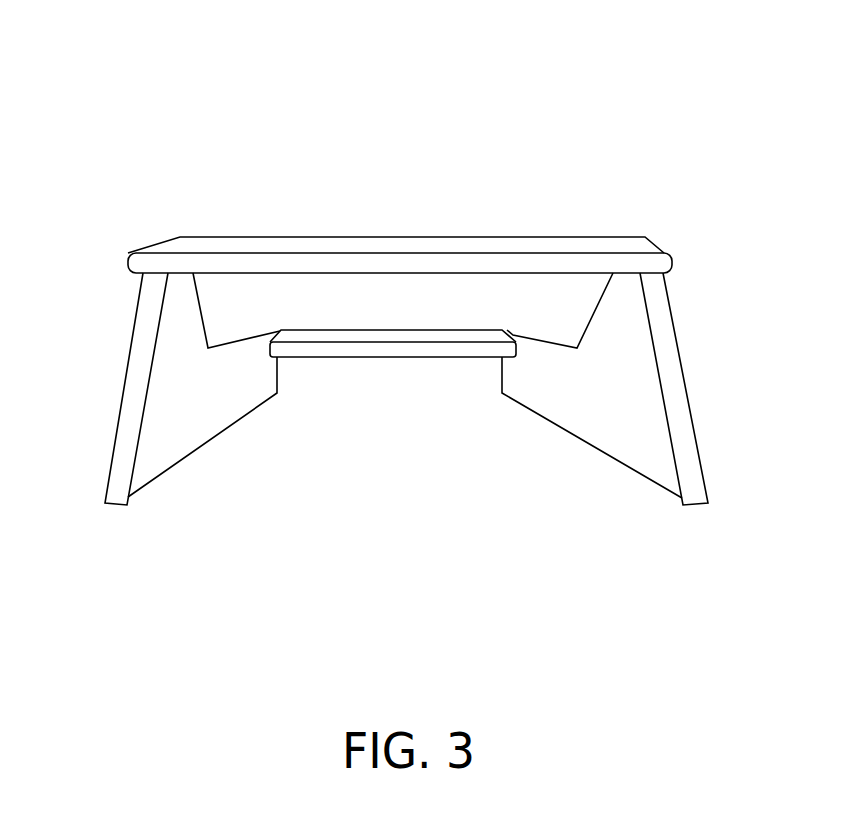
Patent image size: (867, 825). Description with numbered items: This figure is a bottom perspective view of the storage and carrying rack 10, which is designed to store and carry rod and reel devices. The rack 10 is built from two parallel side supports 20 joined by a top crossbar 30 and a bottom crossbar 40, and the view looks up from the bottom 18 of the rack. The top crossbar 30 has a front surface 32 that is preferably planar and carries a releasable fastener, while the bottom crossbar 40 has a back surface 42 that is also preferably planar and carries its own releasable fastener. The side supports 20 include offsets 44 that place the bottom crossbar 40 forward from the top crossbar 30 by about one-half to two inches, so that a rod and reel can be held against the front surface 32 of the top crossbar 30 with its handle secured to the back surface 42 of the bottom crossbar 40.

The storage and carrying rack 10 is at (666, 82).
The bottom 18 is at (104, 452).
The side supports 20 is at (616, 453).
The top crossbar 30 is at (397, 358).
The front surface 32 is at (333, 334).
The bottom crossbar 40 is at (440, 256).
The back surface 42 is at (556, 276).
The offsets 44 is at (172, 332).